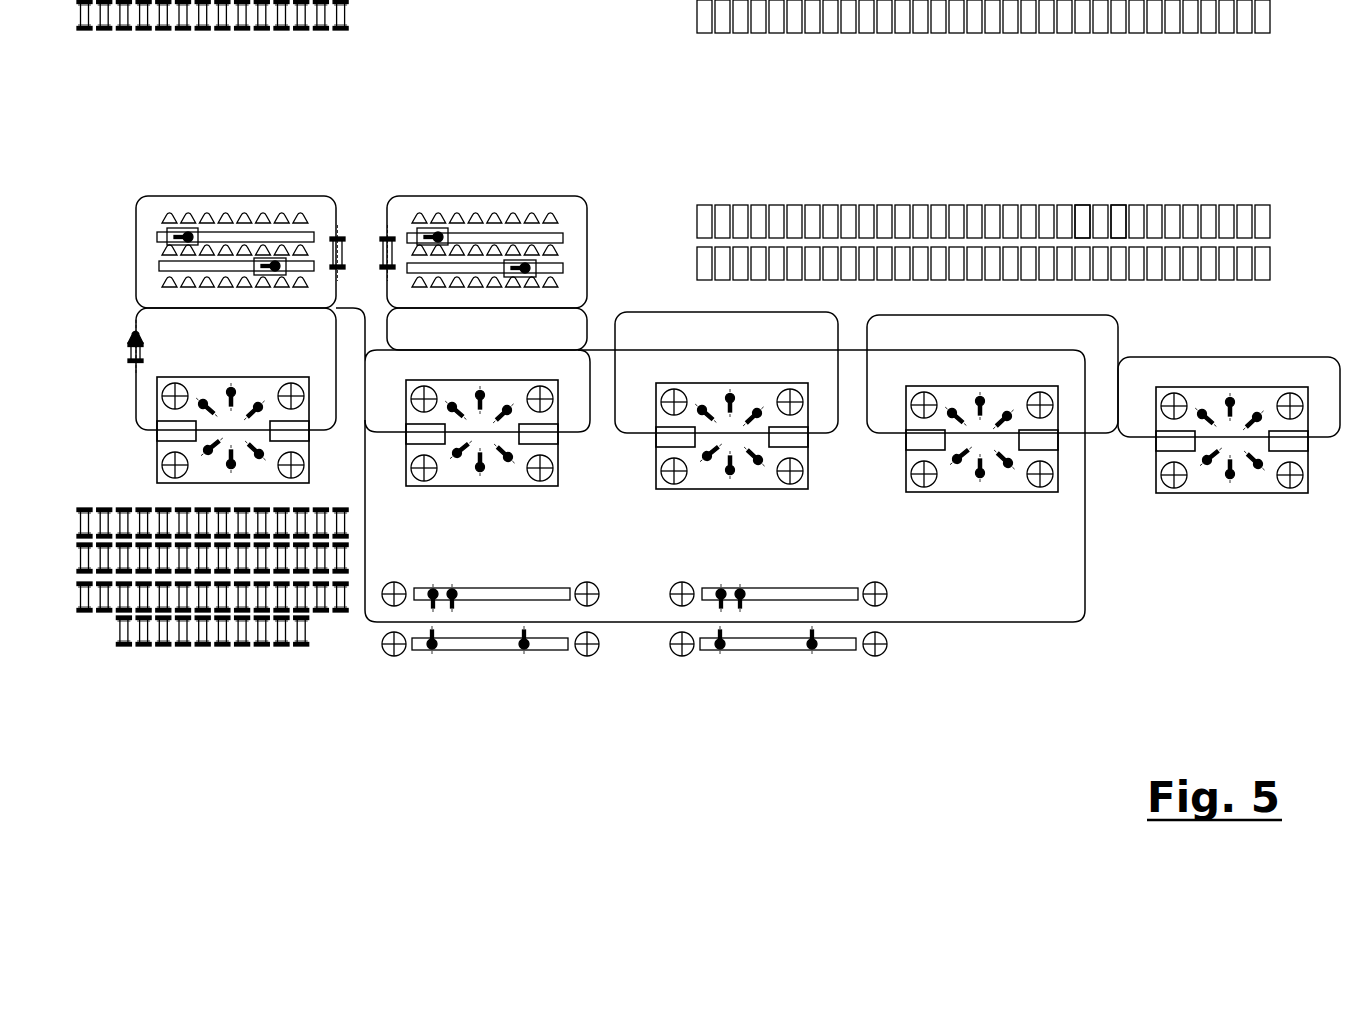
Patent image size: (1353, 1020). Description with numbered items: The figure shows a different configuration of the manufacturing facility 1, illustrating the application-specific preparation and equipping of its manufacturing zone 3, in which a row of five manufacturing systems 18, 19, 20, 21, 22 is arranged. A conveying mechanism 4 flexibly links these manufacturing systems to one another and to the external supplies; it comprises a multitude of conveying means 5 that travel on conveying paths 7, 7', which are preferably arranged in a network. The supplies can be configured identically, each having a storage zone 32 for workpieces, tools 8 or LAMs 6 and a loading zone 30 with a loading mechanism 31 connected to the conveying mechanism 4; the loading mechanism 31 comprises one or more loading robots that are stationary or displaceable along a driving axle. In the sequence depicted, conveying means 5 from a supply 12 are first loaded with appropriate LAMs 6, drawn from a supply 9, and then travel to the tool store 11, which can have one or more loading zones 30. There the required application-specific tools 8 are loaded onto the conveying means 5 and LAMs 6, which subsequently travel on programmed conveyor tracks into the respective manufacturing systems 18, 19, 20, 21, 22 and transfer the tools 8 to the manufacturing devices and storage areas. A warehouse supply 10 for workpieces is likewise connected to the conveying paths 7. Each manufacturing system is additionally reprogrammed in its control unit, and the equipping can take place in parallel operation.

The manufacturing facility 1 is at (1216, 178).
The manufacturing zone 3 is at (874, 487).
The conveying mechanism 4 is at (1104, 524).
The conveying means 5 is at (386, 236).
The LAM 6 is at (1118, 216).
The conveying path 7 is at (727, 465).
The conveying path 7' is at (1229, 371).
The tool 8 is at (266, 214).
The supply 9 is at (951, 200).
The supply 10 is at (764, 655).
The tool store 11 is at (524, 168).
The supply 12 is at (219, 652).
The manufacturing system 18 is at (258, 388).
The manufacturing system 19 is at (460, 486).
The manufacturing system 20 is at (765, 489).
The manufacturing system 21 is at (997, 491).
The manufacturing system 22 is at (1272, 494).
The loading zone 30 is at (238, 206).
The loading mechanism 31 is at (186, 231).
The storage zone 32 is at (566, 290).